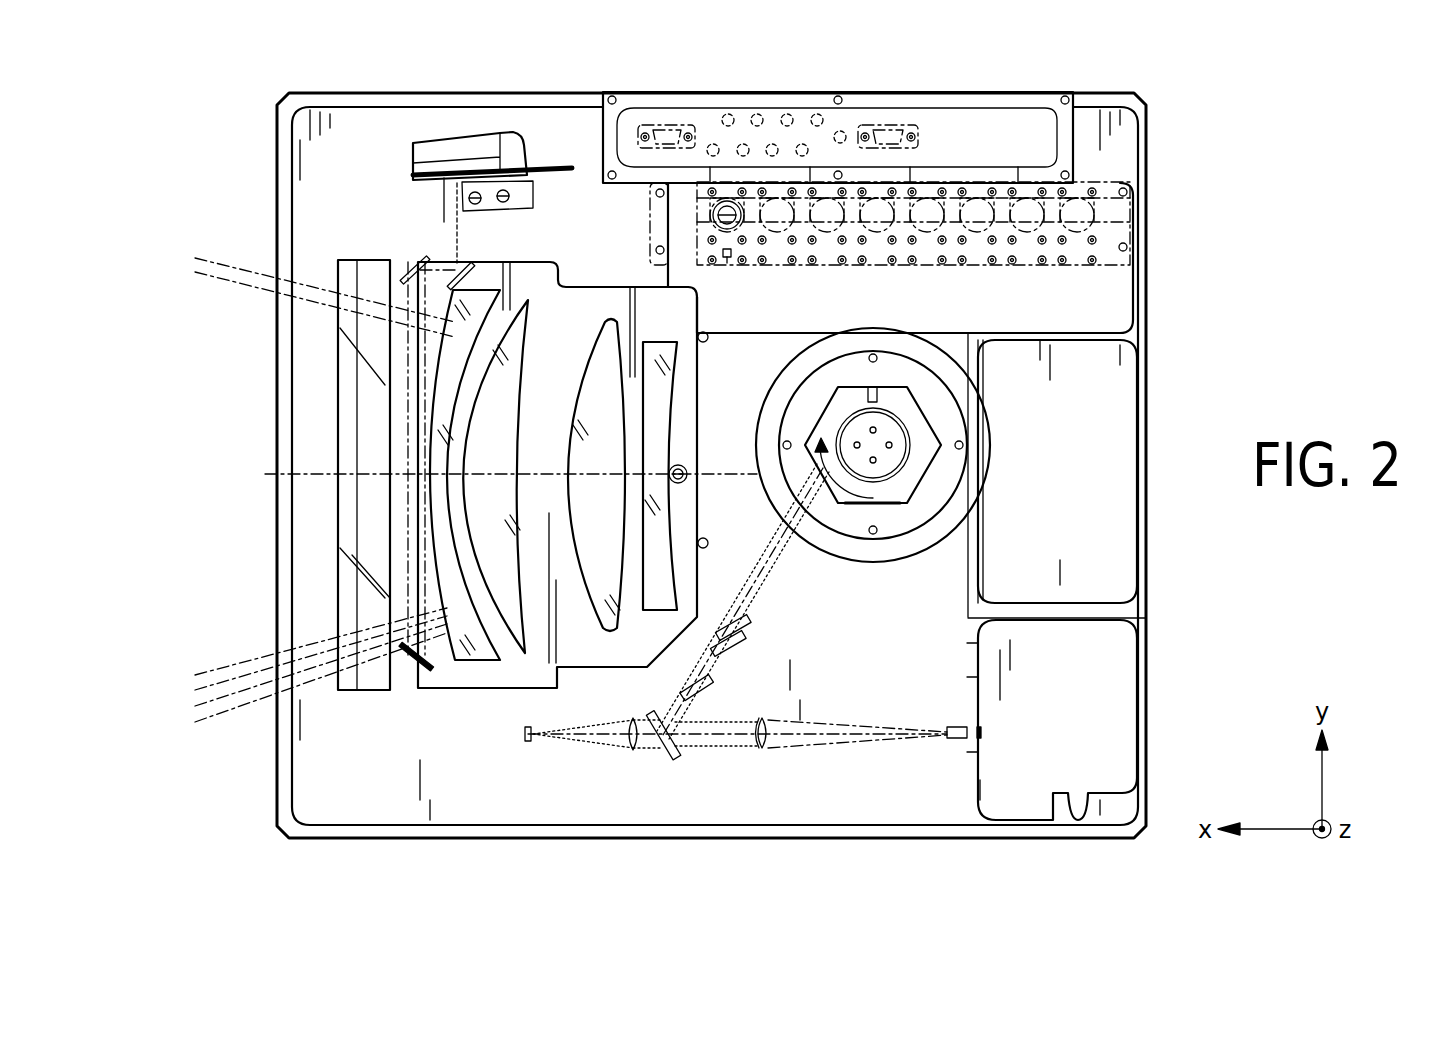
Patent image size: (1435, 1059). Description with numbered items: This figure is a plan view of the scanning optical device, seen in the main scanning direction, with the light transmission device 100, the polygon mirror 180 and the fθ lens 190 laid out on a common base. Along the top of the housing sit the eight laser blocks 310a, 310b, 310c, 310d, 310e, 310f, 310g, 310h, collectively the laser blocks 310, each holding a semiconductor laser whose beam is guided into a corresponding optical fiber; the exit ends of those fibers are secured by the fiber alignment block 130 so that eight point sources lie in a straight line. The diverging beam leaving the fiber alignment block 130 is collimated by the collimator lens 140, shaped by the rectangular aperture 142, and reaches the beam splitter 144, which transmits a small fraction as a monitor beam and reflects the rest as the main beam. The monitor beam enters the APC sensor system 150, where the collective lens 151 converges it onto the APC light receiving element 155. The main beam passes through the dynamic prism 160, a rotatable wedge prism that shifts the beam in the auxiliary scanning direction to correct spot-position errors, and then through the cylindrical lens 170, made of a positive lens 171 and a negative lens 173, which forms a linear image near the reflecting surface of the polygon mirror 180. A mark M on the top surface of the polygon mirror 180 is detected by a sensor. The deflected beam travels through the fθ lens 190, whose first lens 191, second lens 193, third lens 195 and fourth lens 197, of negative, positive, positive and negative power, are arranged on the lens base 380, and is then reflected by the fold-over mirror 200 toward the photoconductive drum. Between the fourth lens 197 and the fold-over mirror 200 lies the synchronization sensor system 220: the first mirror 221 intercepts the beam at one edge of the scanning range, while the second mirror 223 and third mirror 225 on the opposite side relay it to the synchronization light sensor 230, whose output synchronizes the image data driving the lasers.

The light transmission device 100 is at (1190, 234).
The fiber alignment block 130 is at (972, 730).
The collimator lens 140 is at (776, 752).
The aperture 142 is at (762, 750).
The beam splitter 144 is at (678, 756).
The automatic power control (APC) sensor system 150 is at (490, 802).
The collective lens 151 is at (637, 748).
The APC light receiving element 155 is at (528, 742).
The dynamic prism 160 is at (712, 690).
The cylindrical lens 170 is at (828, 590).
The lens (of cylindrical lens) 171 is at (745, 650).
The lens (of cylindrical lens) 173 is at (748, 627).
The polygon mirror 180 is at (920, 478).
The fθ lens 190 is at (467, 227).
The first lens 191 is at (650, 345).
The second lens 193 is at (597, 325).
The third lens 195 is at (527, 295).
The fourth lens 197 is at (480, 293).
The fold-over mirror 200 is at (373, 690).
The synchronization sensor system 220 is at (217, 312).
The first mirror 221 is at (405, 650).
The second mirror 223 is at (463, 273).
The third mirror 225 is at (413, 277).
The synchronization light sensor 230 is at (445, 182).
The laser block 310 is at (1123, 207).
The laser block 310a is at (741, 238).
The laser block 310b is at (790, 234).
The laser block 310c is at (840, 238).
The laser block 310d is at (890, 234).
The laser block 310e is at (940, 238).
The laser block 310f is at (990, 234).
The laser block 310g is at (1040, 238).
The laser block 310h is at (1090, 234).
The lens base 380 is at (700, 418).
The mark M is at (877, 392).